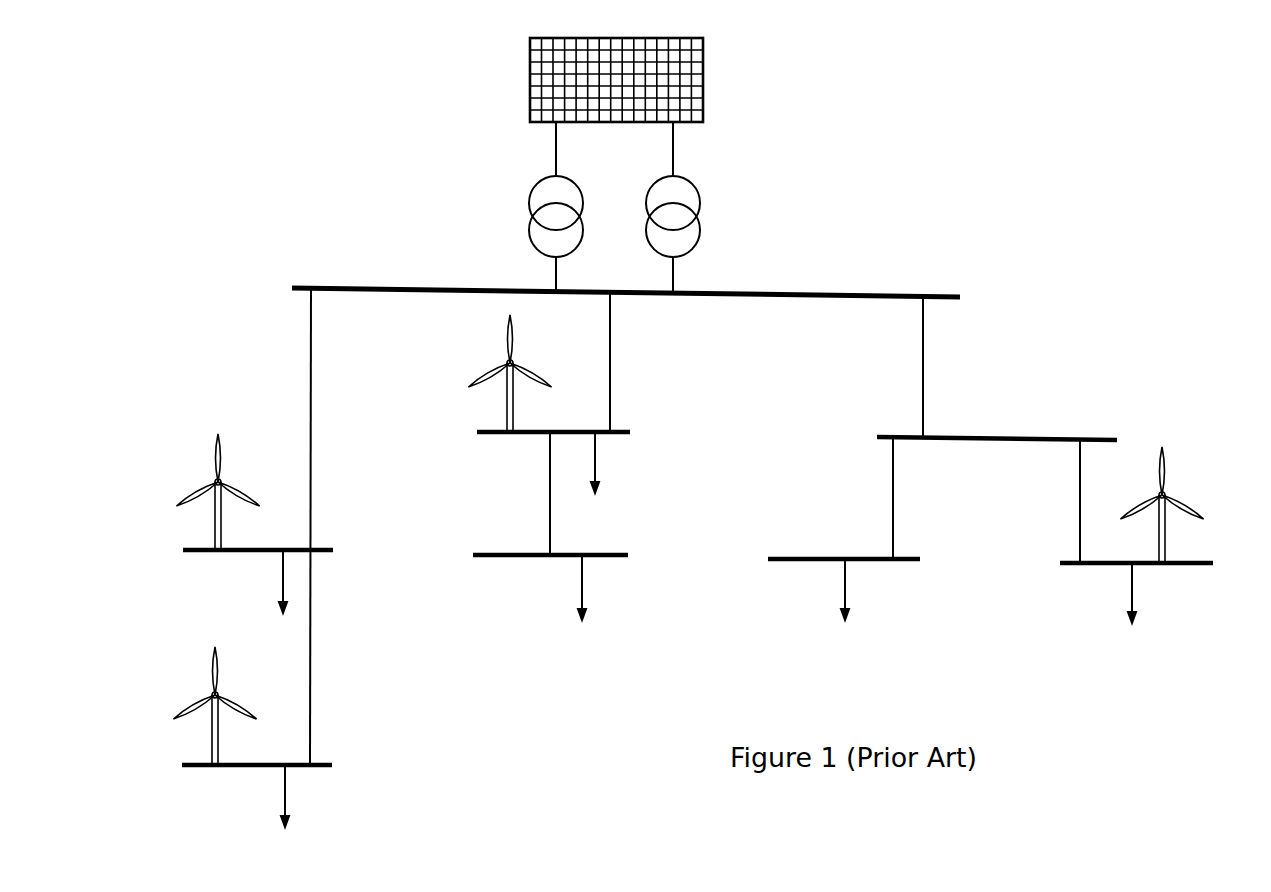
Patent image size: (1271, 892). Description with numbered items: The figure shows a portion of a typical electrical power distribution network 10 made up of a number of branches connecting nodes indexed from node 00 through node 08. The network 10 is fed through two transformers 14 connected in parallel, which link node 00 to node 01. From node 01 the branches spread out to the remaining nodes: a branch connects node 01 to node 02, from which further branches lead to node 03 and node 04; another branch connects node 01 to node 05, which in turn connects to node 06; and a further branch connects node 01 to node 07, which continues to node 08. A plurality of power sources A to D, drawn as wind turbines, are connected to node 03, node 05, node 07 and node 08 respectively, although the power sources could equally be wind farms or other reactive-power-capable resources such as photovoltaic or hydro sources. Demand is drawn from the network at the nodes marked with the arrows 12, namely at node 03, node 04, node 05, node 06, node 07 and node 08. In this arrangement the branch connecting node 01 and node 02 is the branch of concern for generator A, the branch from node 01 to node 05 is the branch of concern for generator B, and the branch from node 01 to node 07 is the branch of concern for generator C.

The node 00 is at (582, 80).
The node 01 is at (605, 507).
The node 02 is at (973, 485).
The node 03 is at (1112, 513).
The node 04 is at (817, 556).
The node 05 is at (522, 435).
The node 06 is at (521, 548).
The node 07 is at (226, 498).
The node 08 is at (225, 716).
The electrical power distribution network 10 is at (913, 212).
The arrows 12 is at (707, 629).
The transformers 14 is at (712, 195).